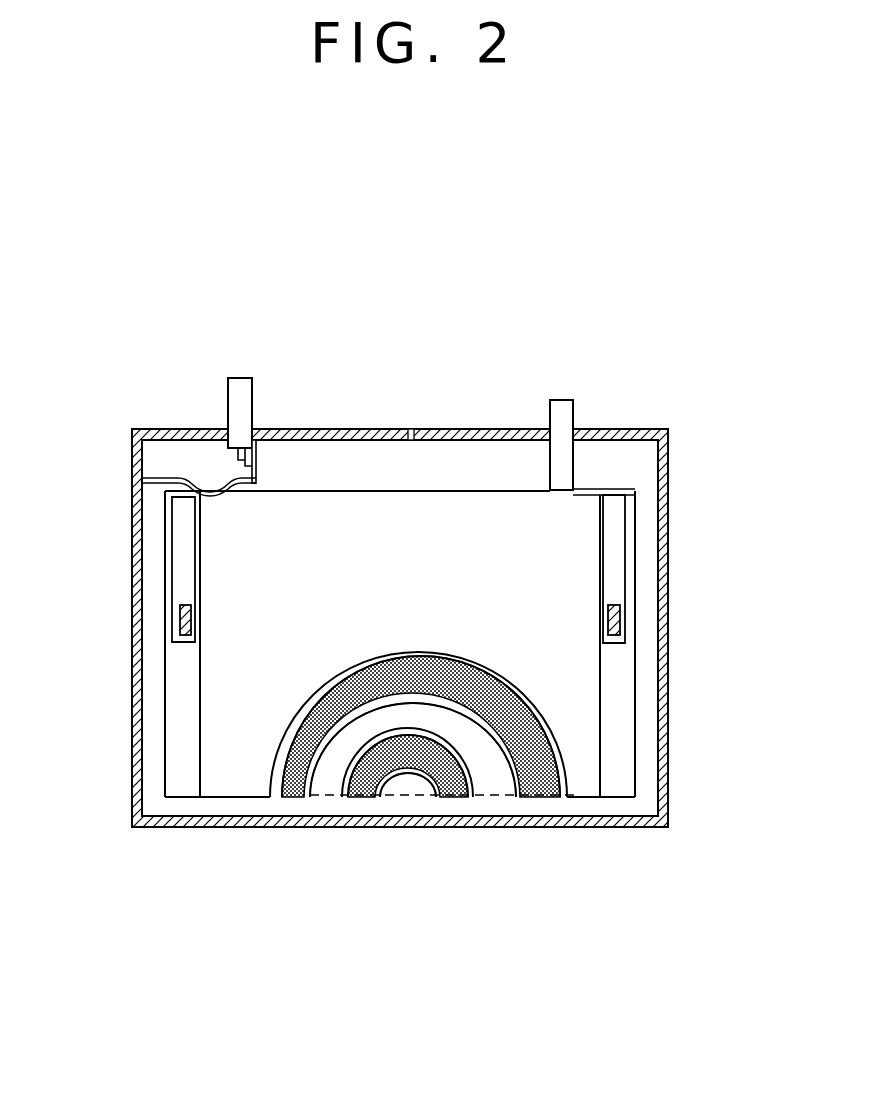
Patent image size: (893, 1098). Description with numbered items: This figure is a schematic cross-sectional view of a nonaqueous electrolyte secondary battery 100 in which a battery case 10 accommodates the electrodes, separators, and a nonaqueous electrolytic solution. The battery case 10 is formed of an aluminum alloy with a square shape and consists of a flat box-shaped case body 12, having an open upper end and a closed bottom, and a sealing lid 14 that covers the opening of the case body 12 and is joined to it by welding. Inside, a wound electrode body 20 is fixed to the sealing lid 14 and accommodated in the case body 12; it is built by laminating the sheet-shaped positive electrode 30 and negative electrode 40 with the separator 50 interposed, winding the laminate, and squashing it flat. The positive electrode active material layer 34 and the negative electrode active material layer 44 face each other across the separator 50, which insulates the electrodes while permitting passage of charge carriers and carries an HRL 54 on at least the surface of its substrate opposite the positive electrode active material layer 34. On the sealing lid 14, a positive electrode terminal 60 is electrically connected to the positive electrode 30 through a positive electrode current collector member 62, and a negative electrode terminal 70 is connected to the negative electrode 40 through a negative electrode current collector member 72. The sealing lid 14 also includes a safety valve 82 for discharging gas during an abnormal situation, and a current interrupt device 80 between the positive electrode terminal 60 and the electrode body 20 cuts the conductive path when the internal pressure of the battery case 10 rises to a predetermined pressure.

The nonaqueous electrolyte secondary battery 100 is at (667, 331).
The battery case 10 is at (670, 587).
The case body 12 is at (662, 777).
The sealing lid 14 is at (511, 428).
The wound electrode body 20 is at (340, 525).
The positive electrode 30 is at (282, 797).
The positive electrode active material layer 34 is at (398, 796).
The negative electrode 40 is at (365, 792).
The negative electrode active material layer 44 is at (408, 836).
The separator 50 is at (230, 775).
The HRL 54 is at (347, 819).
The positive electrode terminal 60 is at (237, 385).
The positive electrode current collector member 62 is at (185, 558).
The negative electrode terminal 70 is at (558, 415).
The negative electrode current collector member 72 is at (615, 517).
The current interrupt device 80 is at (162, 452).
The safety valve 82 is at (412, 428).